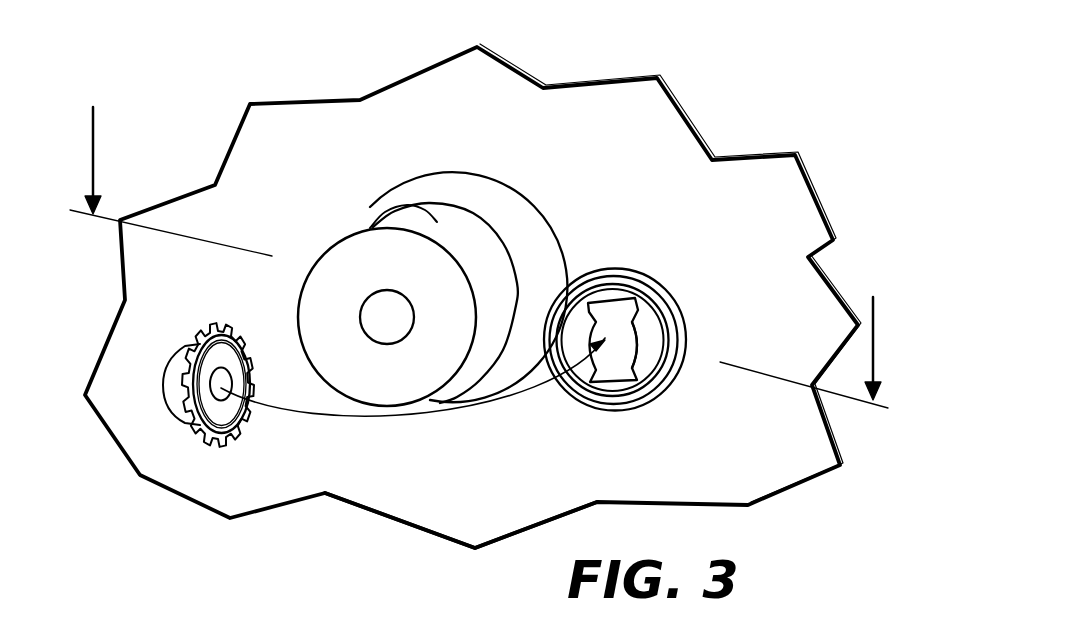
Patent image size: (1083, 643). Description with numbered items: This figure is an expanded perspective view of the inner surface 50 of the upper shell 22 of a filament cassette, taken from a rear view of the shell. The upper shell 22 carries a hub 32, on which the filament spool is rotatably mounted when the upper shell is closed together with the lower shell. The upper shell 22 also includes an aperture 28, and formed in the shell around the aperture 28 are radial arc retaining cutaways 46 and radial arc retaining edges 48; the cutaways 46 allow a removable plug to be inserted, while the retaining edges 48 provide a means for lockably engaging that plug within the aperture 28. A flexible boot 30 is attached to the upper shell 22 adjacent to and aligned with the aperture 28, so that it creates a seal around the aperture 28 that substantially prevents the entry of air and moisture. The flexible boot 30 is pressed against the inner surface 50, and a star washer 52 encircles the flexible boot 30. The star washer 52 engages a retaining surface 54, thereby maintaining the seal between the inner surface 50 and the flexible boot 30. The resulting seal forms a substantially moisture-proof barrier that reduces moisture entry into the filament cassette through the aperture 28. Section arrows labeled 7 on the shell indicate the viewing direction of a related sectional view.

The upper shell 22 is at (645, 58).
The section line 7- 7 is at (487, 253).
The hub 32 is at (372, 208).
The flexible boot 30 is at (172, 368).
The star washer 52 is at (236, 333).
The radial arc retaining cutaways 46 is at (625, 297).
The retaining surface 54 is at (585, 398).
The aperture 28 is at (625, 357).
The radial arc retaining edges 48 is at (632, 332).
The inner surface 50 is at (432, 497).